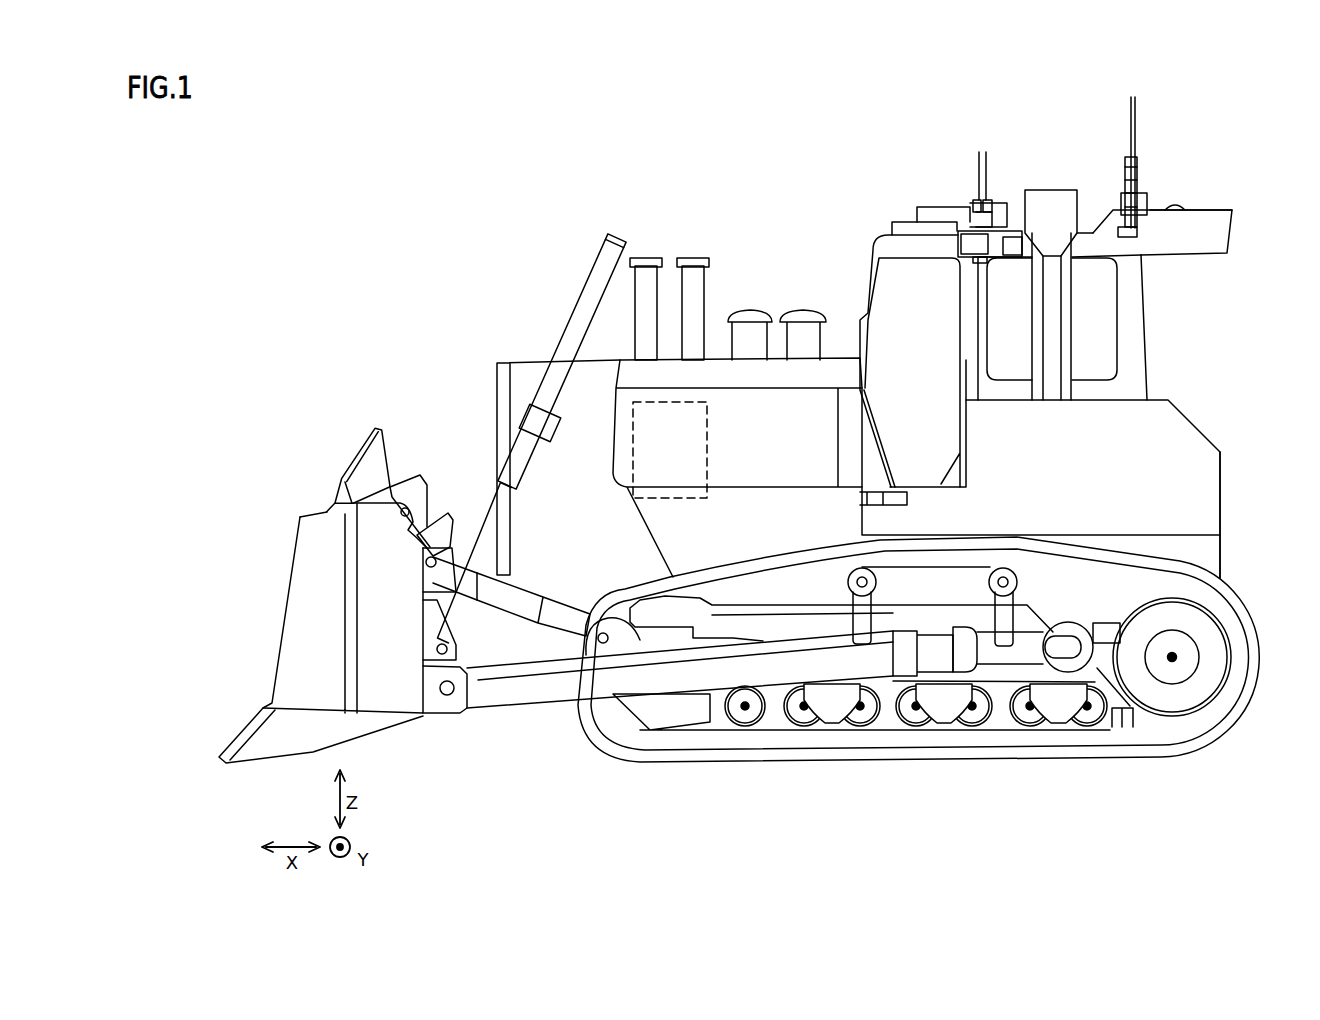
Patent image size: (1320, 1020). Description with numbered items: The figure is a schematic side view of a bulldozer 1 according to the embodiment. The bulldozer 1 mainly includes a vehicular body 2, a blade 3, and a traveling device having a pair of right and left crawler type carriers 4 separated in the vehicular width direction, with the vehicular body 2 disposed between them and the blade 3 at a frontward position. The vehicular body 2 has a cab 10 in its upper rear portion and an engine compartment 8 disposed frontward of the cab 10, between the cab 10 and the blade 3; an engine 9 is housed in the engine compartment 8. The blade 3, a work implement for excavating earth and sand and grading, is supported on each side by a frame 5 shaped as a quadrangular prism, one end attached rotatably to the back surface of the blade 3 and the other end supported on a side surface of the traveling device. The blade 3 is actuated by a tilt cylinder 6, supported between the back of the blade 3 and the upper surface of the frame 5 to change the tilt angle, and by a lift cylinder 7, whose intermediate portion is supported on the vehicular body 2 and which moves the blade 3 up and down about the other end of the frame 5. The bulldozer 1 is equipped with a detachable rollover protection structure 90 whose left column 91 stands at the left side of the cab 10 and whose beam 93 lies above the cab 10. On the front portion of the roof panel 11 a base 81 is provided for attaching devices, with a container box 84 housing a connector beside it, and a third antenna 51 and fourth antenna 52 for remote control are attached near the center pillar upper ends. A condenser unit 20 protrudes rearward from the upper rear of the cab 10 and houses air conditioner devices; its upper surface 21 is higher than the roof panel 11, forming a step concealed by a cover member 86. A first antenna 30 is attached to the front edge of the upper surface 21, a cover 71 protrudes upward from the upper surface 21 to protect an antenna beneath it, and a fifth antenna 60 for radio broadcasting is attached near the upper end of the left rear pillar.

The bulldozer 1 is at (1189, 153).
The vehicular body 2 is at (772, 410).
The blade 3 is at (305, 600).
The crawler type carrier 4 is at (943, 762).
The frame 5 is at (550, 680).
The tilt cylinder 6 is at (525, 600).
The lift cylinder 7 is at (597, 278).
The engine compartment 8 is at (713, 413).
The engine 9 is at (662, 402).
The cab 10 is at (1093, 247).
The roof panel 11 is at (1087, 227).
The condenser unit 20 is at (1210, 233).
The upper surface of condenser unit 21 is at (1213, 207).
The first antenna 30 is at (1127, 122).
The third antenna 51 is at (989, 170).
The fourth antenna 52 is at (977, 170).
The fifth antenna 60 is at (1147, 167).
The cover 71 is at (1180, 207).
The base 81 is at (903, 227).
The container box 84 is at (933, 213).
The cover member 86 is at (1110, 227).
The rollover protection structure 90 is at (1050, 176).
The left column 91 is at (1055, 335).
The beam 93 is at (1023, 208).